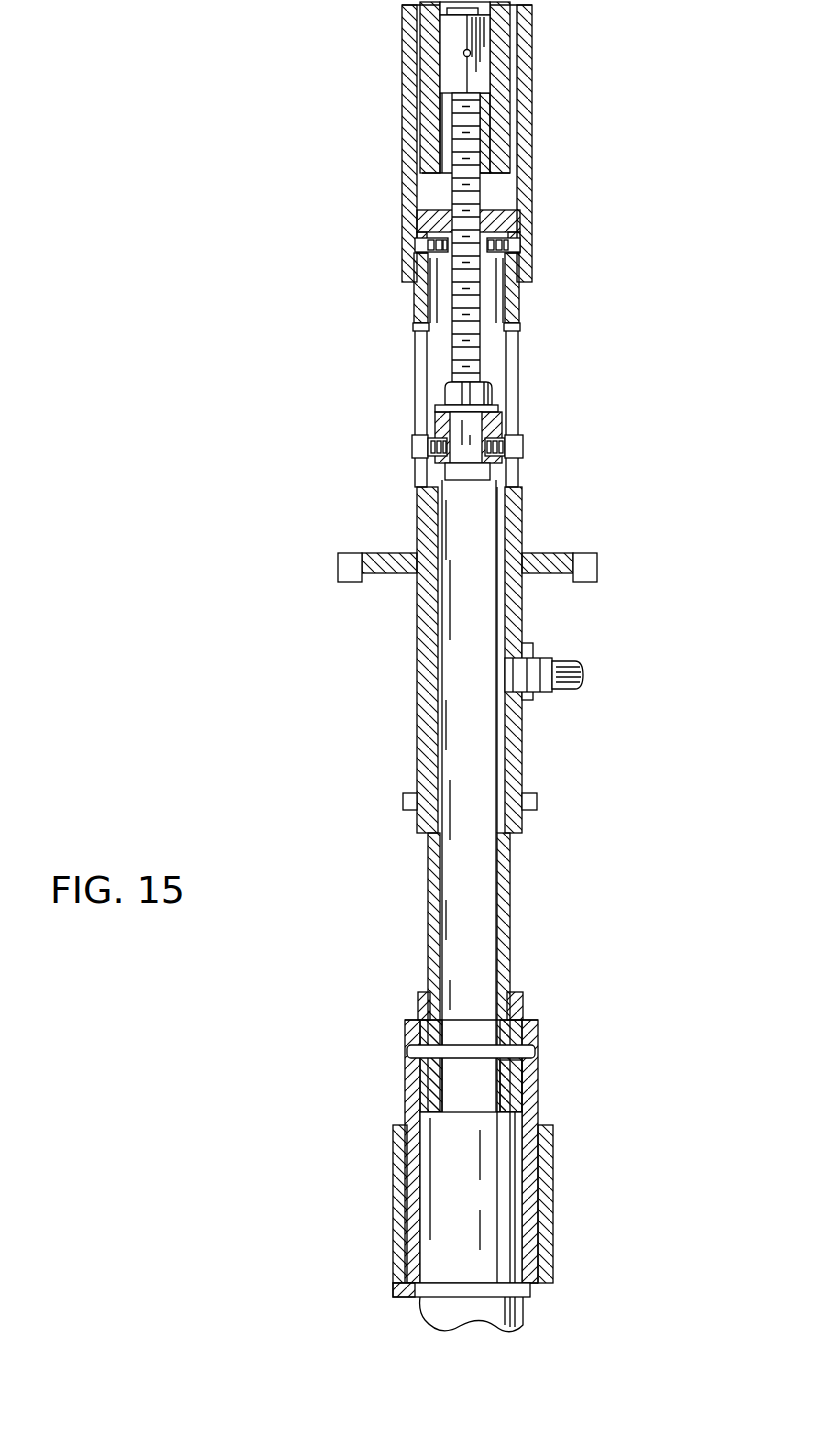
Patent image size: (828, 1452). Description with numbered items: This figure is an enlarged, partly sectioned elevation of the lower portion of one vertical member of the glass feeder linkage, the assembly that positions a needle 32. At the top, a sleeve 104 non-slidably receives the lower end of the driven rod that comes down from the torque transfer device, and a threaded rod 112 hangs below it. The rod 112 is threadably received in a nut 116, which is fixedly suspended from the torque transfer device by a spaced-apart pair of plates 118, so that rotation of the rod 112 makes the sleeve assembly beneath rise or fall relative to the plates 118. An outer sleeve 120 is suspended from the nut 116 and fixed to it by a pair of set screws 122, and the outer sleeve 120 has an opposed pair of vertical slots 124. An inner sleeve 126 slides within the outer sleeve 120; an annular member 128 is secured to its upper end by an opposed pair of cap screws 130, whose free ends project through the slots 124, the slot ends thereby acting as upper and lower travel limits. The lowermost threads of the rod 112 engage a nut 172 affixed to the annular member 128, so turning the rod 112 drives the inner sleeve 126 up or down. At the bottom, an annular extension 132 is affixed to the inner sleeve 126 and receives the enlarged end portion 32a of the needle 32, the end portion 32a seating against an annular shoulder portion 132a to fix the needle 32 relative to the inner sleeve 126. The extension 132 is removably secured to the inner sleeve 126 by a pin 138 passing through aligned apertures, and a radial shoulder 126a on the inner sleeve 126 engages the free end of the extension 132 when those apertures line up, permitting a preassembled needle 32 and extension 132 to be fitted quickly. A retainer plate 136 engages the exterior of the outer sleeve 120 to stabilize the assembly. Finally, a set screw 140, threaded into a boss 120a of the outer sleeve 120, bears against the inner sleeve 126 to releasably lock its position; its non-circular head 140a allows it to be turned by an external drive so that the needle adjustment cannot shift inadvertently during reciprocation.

The needle 32 is at (520, 1328).
The enlarged end portion 32a is at (435, 1203).
The sleeve 104 is at (430, 68).
The rod 112 is at (482, 152).
The nut 116 is at (500, 220).
The plates 118 is at (402, 144).
The outer sleeve 120 is at (522, 313).
The boss 120a is at (533, 652).
The ball bearing 122 is at (412, 246).
The vertical slots 124 is at (420, 365).
The inner sleeve 126 is at (500, 612).
The radial shoulder 126a is at (523, 1002).
The annular member 128 is at (500, 420).
The cap screws 130 is at (413, 443).
The annular extension 132 is at (533, 1092).
The annular shoulder portion 132a is at (515, 1100).
The retainer plate 136 is at (588, 569).
The pin 138 is at (476, 1053).
The set screw 140 is at (568, 692).
The head 140a is at (585, 676).
The nut 172 is at (492, 386).